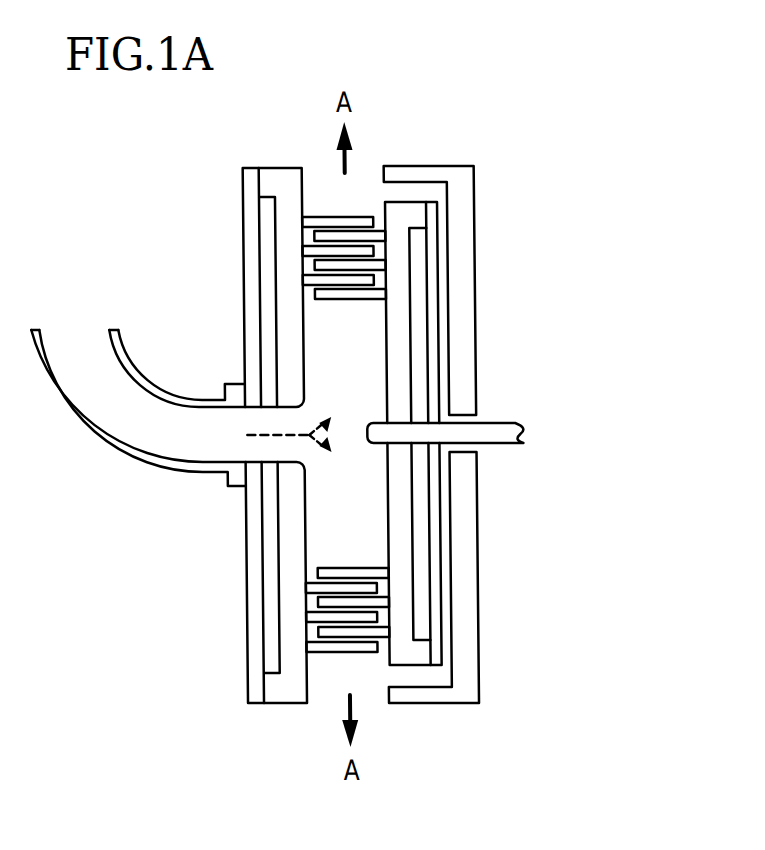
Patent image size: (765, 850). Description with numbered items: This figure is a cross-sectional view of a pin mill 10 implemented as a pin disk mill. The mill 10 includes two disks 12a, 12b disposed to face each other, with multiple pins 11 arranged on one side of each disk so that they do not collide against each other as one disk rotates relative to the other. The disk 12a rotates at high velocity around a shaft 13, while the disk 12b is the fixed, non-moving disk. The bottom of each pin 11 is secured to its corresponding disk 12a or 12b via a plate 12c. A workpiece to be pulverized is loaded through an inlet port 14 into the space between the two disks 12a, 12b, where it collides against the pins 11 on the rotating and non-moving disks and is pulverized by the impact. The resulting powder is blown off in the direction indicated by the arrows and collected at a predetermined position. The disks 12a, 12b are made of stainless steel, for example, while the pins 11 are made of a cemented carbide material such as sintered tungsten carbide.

The pin mill 10 is at (549, 192).
The pins 11 is at (352, 217).
The disk 12a is at (410, 655).
The disk 12b is at (271, 687).
The plate 12c is at (243, 242).
The shaft 13 is at (498, 429).
The inlet port 14 is at (72, 305).